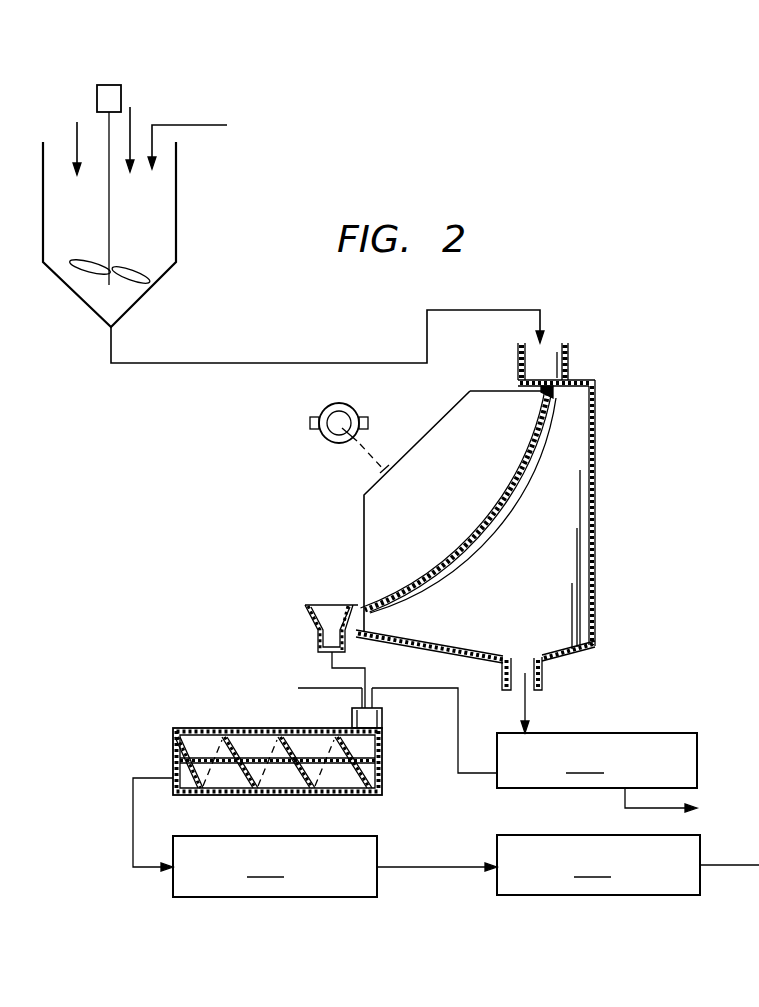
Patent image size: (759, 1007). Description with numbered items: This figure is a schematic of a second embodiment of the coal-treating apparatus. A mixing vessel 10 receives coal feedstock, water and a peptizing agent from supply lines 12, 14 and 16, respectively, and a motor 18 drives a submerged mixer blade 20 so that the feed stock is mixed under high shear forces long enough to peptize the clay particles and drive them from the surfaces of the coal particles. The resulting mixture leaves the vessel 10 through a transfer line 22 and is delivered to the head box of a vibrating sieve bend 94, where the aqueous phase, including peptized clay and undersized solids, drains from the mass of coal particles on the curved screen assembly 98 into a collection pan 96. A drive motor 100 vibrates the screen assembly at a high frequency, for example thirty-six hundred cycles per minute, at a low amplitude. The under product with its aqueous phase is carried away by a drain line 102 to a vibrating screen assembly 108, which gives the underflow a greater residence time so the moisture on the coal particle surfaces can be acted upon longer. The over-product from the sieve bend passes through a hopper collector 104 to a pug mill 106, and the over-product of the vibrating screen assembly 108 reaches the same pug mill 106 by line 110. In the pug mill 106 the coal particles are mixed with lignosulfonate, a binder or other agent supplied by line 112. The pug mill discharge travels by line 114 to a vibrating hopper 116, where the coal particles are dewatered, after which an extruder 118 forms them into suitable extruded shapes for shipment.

The mixing vessel 10 is at (177, 207).
The coal feed stock supply line 12 is at (77, 127).
The water line 14 is at (130, 122).
The peptizing agent line 16 is at (227, 125).
The motor 18 is at (97, 92).
The mixer blade 20 is at (87, 273).
The transfer line 22 is at (243, 363).
The vibrating sieve bend 94 is at (608, 506).
The collection pan 96 is at (597, 566).
The curved screen assembly 98 is at (488, 513).
The drive motor 100 is at (332, 443).
The drain line 102 is at (527, 699).
The hopper collector 104 is at (307, 620).
The pug mill 106 is at (218, 728).
The vibrating screen assembly 108 is at (534, 750).
The line 110 is at (350, 668).
The line 112 is at (313, 688).
The line 114 is at (133, 817).
The vibrating hopper 116 is at (335, 866).
The extruder 118 is at (628, 865).